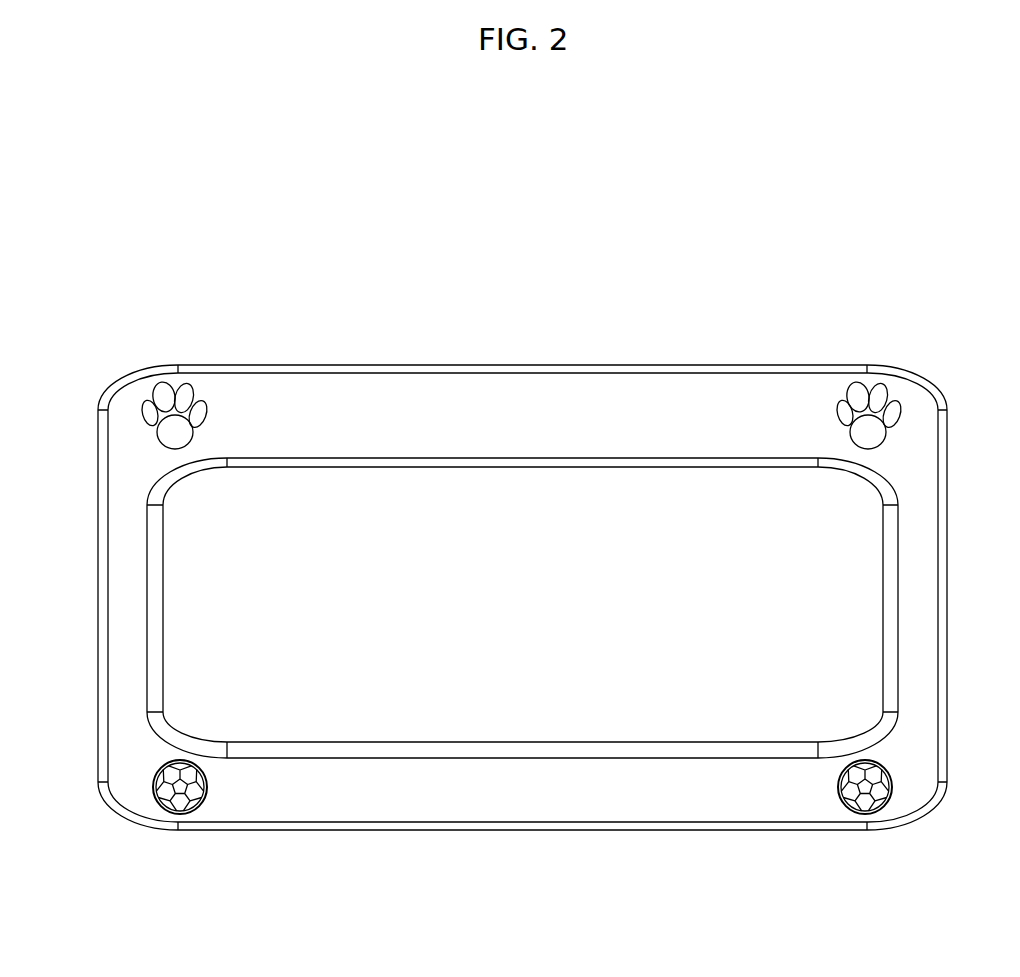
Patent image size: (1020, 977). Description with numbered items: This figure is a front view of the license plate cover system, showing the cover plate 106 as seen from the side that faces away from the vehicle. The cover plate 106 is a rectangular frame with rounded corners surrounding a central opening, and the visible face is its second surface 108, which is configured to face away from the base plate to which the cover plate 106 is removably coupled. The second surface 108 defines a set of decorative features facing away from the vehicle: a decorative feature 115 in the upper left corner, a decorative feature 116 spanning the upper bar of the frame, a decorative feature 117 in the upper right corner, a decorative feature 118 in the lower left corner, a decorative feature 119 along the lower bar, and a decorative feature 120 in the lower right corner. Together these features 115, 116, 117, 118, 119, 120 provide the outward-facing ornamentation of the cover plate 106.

The cover plate 106 is at (125, 358).
The second surface 108 is at (292, 797).
The decorative feature 115 is at (187, 392).
The decorative feature 116 is at (560, 397).
The decorative feature 117 is at (878, 392).
The decorative feature 118 is at (195, 762).
The decorative feature 119 is at (578, 775).
The decorative feature 120 is at (845, 765).